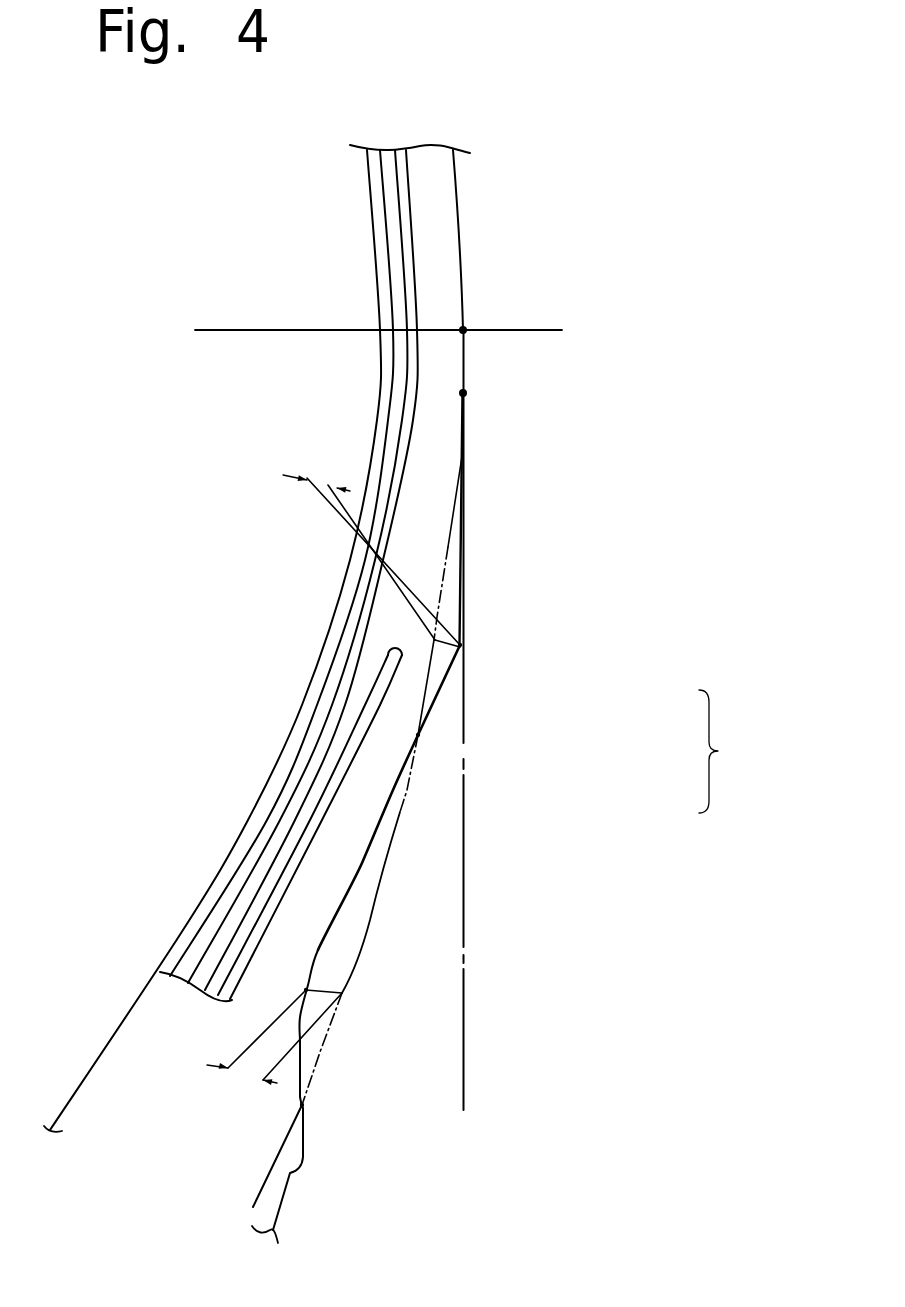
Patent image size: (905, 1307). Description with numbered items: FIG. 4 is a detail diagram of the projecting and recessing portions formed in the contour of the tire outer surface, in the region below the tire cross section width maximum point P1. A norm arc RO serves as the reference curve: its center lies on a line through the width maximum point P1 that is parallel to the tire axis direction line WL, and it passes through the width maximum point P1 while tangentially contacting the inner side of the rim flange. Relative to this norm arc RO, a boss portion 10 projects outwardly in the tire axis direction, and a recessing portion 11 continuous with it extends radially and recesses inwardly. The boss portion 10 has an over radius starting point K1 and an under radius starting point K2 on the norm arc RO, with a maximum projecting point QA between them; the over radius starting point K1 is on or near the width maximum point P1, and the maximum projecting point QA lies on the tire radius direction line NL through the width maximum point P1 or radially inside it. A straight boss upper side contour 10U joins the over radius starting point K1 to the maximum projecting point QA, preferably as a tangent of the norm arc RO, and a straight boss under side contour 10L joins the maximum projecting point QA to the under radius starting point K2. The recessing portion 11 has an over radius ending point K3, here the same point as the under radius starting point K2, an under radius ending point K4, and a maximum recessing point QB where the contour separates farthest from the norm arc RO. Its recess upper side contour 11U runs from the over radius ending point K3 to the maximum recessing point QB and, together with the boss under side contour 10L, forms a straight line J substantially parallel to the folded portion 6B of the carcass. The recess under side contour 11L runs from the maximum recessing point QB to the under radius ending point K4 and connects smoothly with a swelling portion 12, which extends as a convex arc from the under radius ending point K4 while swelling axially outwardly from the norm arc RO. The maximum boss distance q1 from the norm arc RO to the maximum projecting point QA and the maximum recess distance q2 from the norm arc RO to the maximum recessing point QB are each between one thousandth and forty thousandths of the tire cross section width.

The tire axis direction line WL is at (240, 330).
The tire cross section width maximum point P1 is at (463, 330).
The over radius starting point K1 is at (463, 393).
The maximum boss distance q1 is at (320, 478).
The boss portion 10 is at (556, 442).
The boss upper side contour 10U is at (465, 562).
The boss under side contour 10L is at (437, 697).
The maximum projecting point QA is at (460, 645).
The under radius starting point K2 is at (418, 735).
The over radius ending point K3 is at (418, 735).
The straight line J is at (713, 751).
The recessing portion 11 is at (396, 989).
The recess upper side contour 11U is at (365, 863).
The recess under side contour 11L is at (302, 1067).
The maximum recessing point QB is at (307, 988).
The folded portion 6B is at (318, 812).
The norm arc RO is at (377, 898).
The tire radius direction line NL is at (468, 1110).
The maximum recess distance q2 is at (233, 1070).
The under radius ending point K4 is at (302, 1104).
The swelling portion 12 is at (280, 1202).